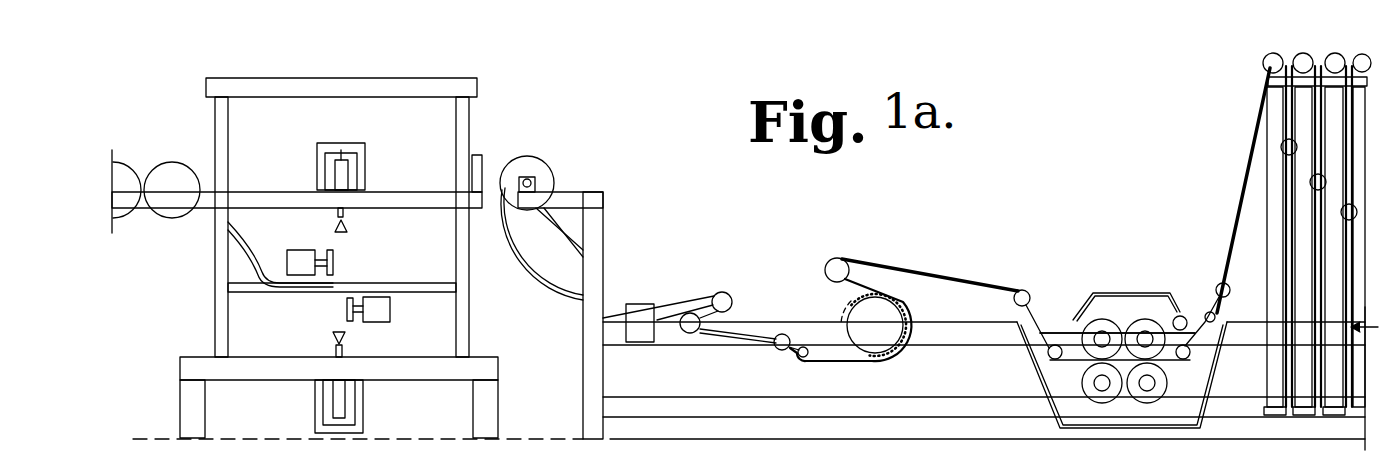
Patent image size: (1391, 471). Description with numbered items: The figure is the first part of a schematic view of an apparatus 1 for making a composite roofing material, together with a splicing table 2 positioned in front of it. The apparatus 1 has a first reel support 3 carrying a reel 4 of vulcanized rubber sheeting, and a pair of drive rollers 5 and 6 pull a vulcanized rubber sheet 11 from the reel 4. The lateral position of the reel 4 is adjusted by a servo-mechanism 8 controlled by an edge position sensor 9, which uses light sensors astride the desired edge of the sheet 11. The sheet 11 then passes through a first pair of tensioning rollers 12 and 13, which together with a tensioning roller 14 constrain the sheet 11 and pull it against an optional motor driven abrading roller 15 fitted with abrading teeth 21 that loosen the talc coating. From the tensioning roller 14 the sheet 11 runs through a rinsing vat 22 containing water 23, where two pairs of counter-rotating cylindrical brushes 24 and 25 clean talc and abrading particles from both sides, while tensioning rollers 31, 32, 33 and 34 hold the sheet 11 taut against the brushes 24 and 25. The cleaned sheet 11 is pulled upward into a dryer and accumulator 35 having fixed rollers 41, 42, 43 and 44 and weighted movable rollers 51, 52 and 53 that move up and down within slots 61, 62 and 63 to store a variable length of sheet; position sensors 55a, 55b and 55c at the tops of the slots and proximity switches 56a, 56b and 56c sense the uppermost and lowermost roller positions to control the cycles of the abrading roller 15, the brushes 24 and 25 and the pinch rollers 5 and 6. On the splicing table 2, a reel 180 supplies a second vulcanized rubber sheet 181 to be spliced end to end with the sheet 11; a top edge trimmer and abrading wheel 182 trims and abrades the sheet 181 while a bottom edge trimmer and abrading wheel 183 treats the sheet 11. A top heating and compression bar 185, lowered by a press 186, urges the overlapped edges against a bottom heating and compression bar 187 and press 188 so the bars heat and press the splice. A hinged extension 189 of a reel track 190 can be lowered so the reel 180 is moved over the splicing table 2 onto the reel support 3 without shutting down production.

The apparatus 1 is at (1090, 236).
The splicing table 2 is at (486, 117).
The first reel support 3 is at (552, 168).
The reel 4 is at (554, 182).
The drive roller 5 is at (727, 293).
The drive roller 6 is at (690, 334).
The servo-mechanism 8 is at (505, 165).
The edge position sensor 9 is at (640, 304).
The vulcanized rubber sheet 11 is at (758, 326).
The tensioning roller 12 is at (788, 334).
The tensioning roller 13 is at (806, 347).
The tensioning roller 14 is at (834, 262).
The abrading roller 15 is at (893, 320).
The abrading teeth 21 is at (904, 323).
The rinsing vat 22 is at (1055, 388).
The water 23 is at (1068, 327).
The counter-rotating cylindrical brushes 24 is at (1147, 322).
The counter-rotating cylindrical brushes 25 is at (1143, 386).
The tensioning roller 31 is at (1039, 270).
The tensioning roller 32 is at (1048, 355).
The tensioning roller 33 is at (1184, 360).
The tensioning roller 34 is at (1184, 317).
The dryer and accumulator 35 is at (1379, 237).
The fixed roller 41 is at (1262, 62).
The fixed roller 42 is at (1301, 58).
The fixed roller 43 is at (1340, 58).
The fixed roller 44 is at (1365, 60).
The movable roller 51 is at (1288, 156).
The movable roller 52 is at (1326, 176).
The movable roller 53 is at (1353, 182).
The position sensor 55a is at (1272, 92).
The position sensor 55b is at (1285, 76).
The position sensor 55c is at (1327, 76).
The proximity switch 56a is at (1277, 417).
The proximity switch 56b is at (1305, 418).
The proximity switch 56c is at (1340, 418).
The slot 61 is at (1288, 268).
The slot 62 is at (1318, 245).
The slot 63 is at (1355, 257).
The reel 180 is at (176, 167).
The second synthetic vulcanized rubber sheet 181 is at (233, 258).
The top edge trimmer and abrading wheel 182 is at (311, 242).
The bottom edge trimmer and abrading wheel 183 is at (400, 305).
The top heating and compression bar 185 is at (346, 229).
The press 186 is at (342, 177).
The bottom heating and compression bar 187 is at (331, 336).
The press 188 is at (336, 410).
The hinged extension 189 is at (483, 157).
The reel track 190 is at (452, 210).